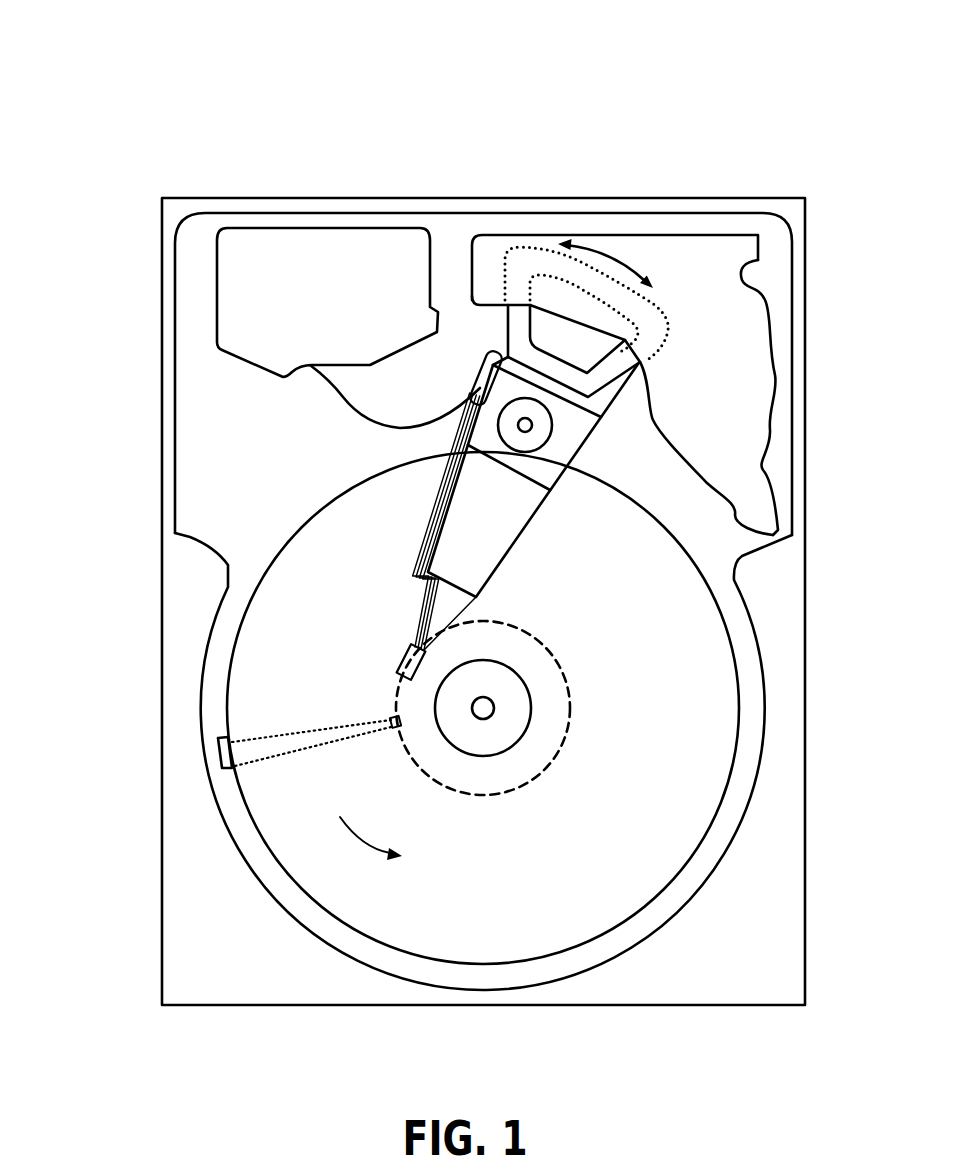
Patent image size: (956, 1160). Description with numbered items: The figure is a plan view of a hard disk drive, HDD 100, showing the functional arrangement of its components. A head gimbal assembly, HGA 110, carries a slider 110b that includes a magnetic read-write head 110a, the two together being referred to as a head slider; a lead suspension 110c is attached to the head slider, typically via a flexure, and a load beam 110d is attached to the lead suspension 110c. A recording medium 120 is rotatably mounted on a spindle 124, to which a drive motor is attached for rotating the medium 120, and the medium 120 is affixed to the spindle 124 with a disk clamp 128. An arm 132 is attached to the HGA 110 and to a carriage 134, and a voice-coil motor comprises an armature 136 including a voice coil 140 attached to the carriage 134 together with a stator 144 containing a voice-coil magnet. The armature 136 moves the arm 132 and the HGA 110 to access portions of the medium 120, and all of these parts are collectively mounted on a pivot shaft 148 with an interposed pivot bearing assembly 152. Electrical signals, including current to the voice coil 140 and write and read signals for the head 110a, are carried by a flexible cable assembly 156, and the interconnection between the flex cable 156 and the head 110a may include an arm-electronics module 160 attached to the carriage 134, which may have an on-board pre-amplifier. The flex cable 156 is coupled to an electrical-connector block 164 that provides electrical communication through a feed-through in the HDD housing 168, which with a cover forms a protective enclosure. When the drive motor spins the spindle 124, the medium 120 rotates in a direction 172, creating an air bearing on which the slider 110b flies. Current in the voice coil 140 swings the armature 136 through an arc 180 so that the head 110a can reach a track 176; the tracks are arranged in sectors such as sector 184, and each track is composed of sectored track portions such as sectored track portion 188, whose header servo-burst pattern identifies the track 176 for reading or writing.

The hard disk drive 100 is at (89, 79).
The head gimbal assembly 110 is at (251, 536).
The magnetic read-write head 110a is at (405, 657).
The slider 110b is at (422, 607).
The lead suspension 110c is at (419, 583).
The load beam 110d is at (412, 572).
The recording medium 120 is at (672, 660).
The spindle 124 is at (484, 707).
The disk clamp 128 is at (510, 723).
The arm 132 is at (477, 542).
The carriage 134 is at (543, 458).
The armature 136 is at (503, 340).
The voice coil 140 is at (518, 317).
The stator 144 is at (737, 325).
The pivot shaft 148 is at (527, 425).
The pivot bearing assembly 152 is at (537, 437).
The flexible cable assembly 156 is at (343, 398).
The arm-electronics module 160 is at (478, 388).
The electrical-connector block 164 is at (242, 300).
The HDD housing 168 is at (790, 212).
The direction of spin 172 is at (396, 825).
The track 176 is at (563, 667).
The arc 180 is at (608, 257).
The sector 184 is at (213, 752).
The sectored track portion 188 is at (392, 714).